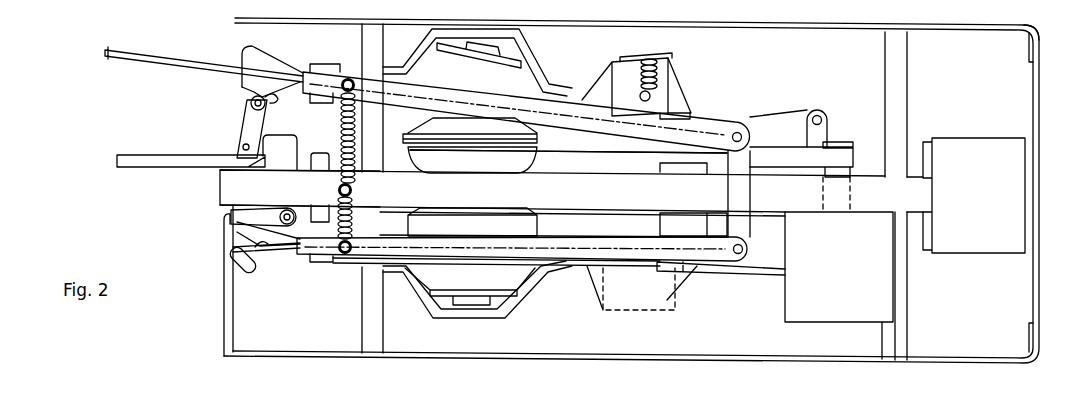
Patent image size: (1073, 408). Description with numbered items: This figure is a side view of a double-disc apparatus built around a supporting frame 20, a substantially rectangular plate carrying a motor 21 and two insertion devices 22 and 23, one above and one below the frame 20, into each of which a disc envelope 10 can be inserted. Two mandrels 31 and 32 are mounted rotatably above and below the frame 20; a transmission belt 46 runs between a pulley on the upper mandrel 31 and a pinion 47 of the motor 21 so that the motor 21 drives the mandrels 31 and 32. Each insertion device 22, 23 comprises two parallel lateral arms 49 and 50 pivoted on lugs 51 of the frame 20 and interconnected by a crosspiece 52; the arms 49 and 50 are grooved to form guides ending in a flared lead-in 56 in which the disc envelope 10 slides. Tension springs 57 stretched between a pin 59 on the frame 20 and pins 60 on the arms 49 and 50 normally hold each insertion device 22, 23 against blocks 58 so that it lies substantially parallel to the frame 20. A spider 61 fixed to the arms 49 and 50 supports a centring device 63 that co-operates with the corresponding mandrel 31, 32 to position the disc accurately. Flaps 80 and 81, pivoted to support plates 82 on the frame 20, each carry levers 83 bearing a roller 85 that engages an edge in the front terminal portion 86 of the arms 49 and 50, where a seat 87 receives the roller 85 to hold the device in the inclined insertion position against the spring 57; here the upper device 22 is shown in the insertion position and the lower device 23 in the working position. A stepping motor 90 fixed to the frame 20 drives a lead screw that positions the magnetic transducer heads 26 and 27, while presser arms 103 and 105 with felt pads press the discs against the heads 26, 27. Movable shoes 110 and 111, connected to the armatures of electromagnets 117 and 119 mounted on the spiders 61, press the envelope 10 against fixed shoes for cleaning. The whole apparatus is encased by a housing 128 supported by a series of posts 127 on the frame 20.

The disc envelope 10 is at (113, 57).
The supporting frame 20 is at (222, 187).
The motor 21 is at (830, 313).
The insertion device 22 is at (222, 41).
The insertion device 23 is at (332, 294).
The magnetic transducer head 26 is at (678, 167).
The magnetic transducer head 27 is at (672, 232).
The mandrel 31 is at (530, 137).
The mandrel 32 is at (537, 225).
The transmission belt 46 is at (582, 153).
The pinion 47 is at (840, 145).
The lateral arm 49 is at (285, 67).
The lateral arm 50 is at (312, 72).
The lug 51 is at (740, 165).
The crosspiece 52 is at (317, 103).
The flared lead-in 56 is at (253, 63).
The tension spring 57 is at (357, 199).
The block 58 is at (317, 214).
The pin 59 is at (339, 188).
The pin 60 is at (348, 79).
The spider 61 is at (535, 60).
The centring device 63 is at (547, 40).
The flap 80 is at (128, 162).
The flap 81 is at (225, 342).
The support plate 82 is at (270, 200).
The lever 83 is at (247, 135).
The roller 85 is at (250, 102).
The front terminal portion 86 is at (240, 88).
The seat 87 is at (273, 98).
The stepping motor 90 is at (1000, 250).
The presser arm 103 is at (783, 117).
The presser arm 105 is at (763, 271).
The movable shoe 110 is at (695, 101).
The movable shoe 111 is at (678, 273).
The electromagnet 117 is at (678, 72).
The electromagnet 119 is at (678, 296).
The post 127 is at (372, 37).
The housing 128 is at (988, 30).